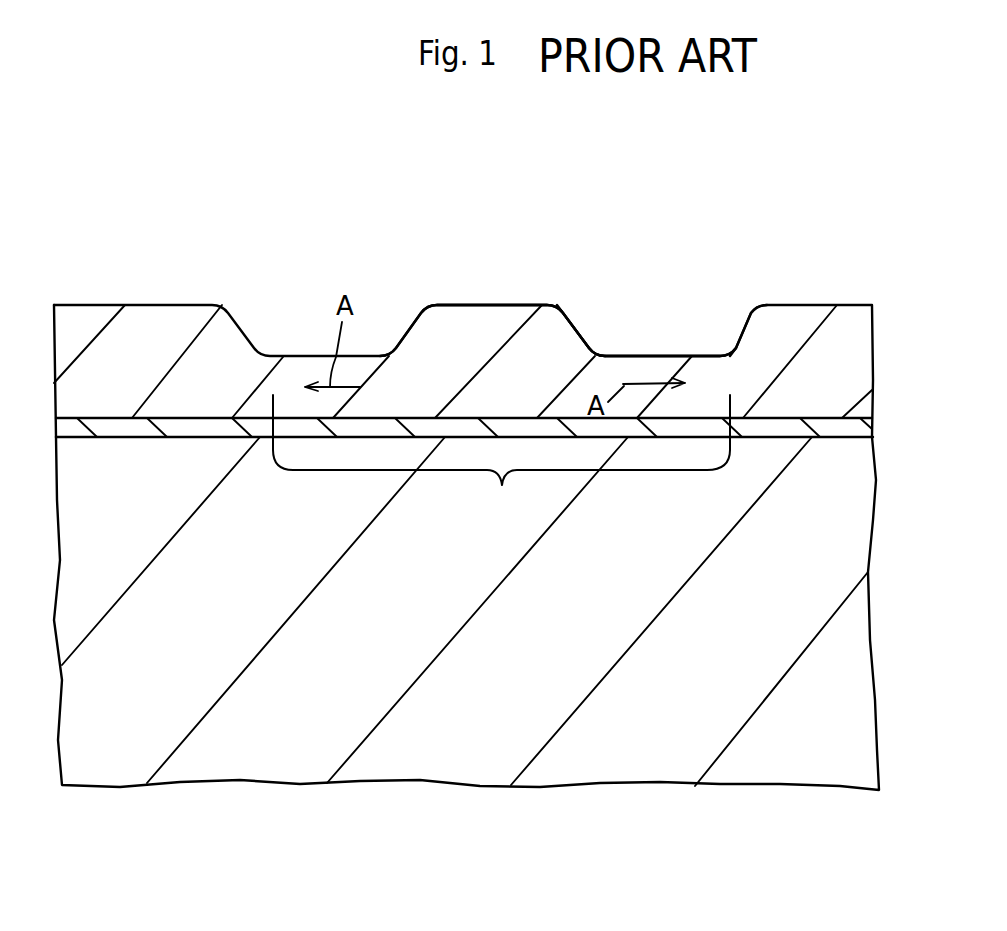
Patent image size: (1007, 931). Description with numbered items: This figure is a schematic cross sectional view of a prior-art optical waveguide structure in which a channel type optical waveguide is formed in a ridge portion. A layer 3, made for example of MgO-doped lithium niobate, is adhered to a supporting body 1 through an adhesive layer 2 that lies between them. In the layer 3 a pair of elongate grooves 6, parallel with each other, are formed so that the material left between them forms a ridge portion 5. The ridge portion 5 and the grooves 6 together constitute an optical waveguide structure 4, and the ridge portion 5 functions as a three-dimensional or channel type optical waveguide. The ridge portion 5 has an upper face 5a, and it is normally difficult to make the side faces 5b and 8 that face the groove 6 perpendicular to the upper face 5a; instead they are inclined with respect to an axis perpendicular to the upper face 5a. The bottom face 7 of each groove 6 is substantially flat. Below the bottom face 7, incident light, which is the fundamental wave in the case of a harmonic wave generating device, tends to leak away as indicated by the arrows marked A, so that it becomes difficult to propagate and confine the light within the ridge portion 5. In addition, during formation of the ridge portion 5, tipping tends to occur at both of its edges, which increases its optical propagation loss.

The supporting body 1 is at (862, 616).
The adhesive layer 2 is at (863, 427).
The layer 3 is at (884, 321).
The optical waveguide structure 4 is at (501, 460).
The ridge portion 5 is at (541, 290).
The upper face 5a is at (477, 305).
The side face 5b is at (583, 332).
The groove 6 is at (680, 312).
The bottom face 7 is at (650, 355).
The side face 8 is at (736, 340).